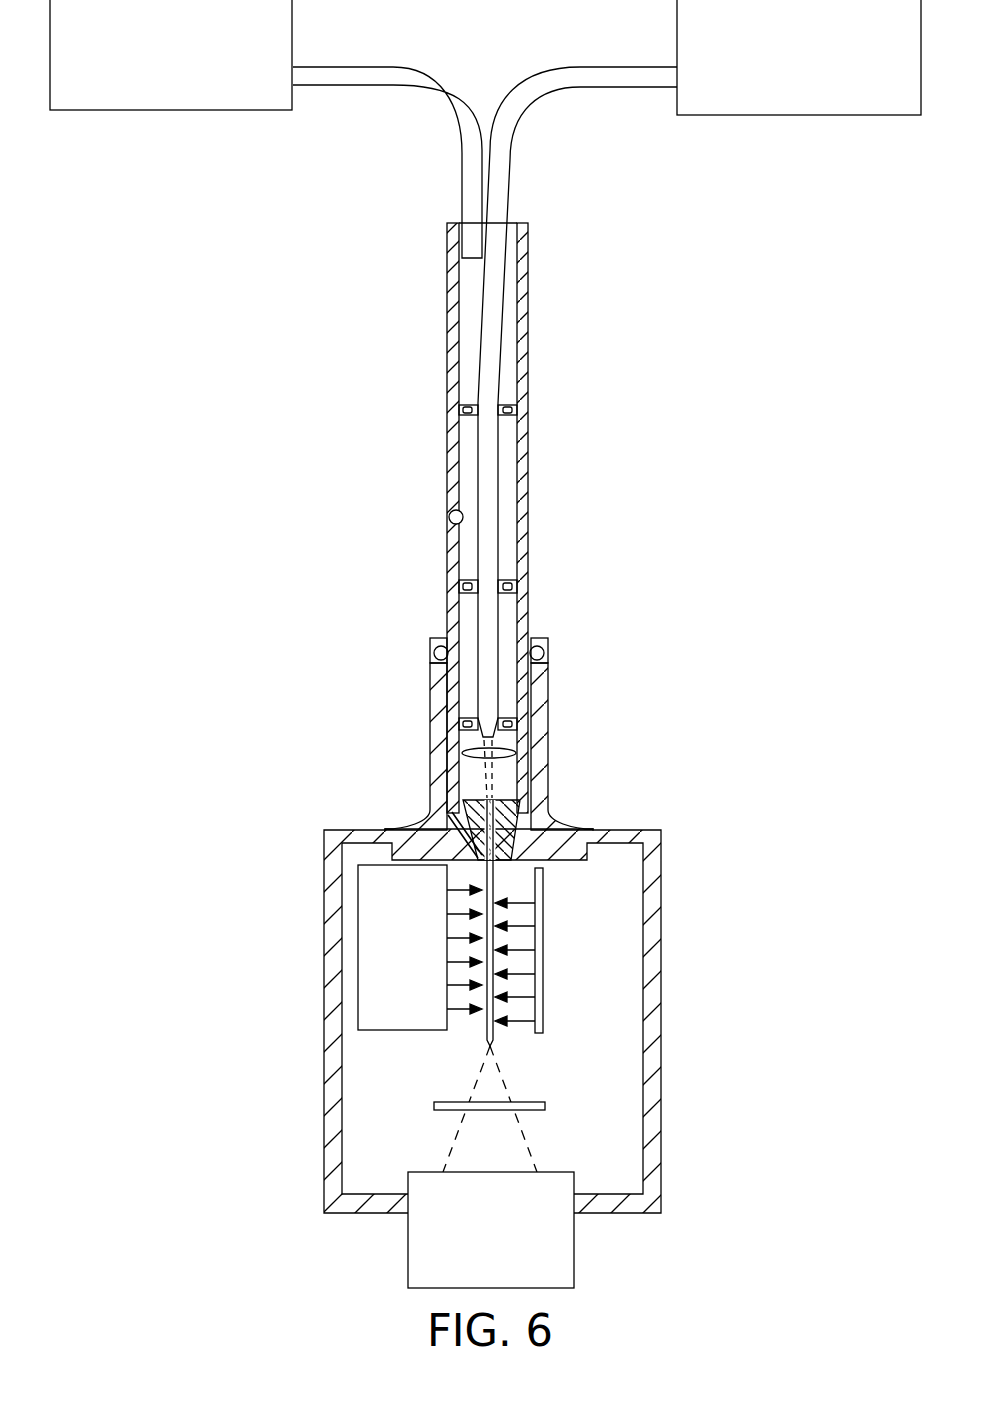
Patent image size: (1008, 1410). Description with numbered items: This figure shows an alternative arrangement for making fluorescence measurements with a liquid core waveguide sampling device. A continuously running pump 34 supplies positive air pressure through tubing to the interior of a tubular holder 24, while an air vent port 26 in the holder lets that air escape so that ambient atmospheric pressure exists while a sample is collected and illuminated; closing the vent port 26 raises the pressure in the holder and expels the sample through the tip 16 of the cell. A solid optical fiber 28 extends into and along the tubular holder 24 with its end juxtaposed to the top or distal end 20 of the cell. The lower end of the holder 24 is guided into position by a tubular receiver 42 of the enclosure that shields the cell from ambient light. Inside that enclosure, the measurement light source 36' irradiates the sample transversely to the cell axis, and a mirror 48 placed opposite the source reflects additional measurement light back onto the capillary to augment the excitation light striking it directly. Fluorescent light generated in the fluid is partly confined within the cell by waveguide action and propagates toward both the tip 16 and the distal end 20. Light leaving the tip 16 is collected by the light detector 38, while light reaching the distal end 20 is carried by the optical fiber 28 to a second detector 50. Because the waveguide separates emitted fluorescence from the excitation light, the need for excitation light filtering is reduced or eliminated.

The pump 34 is at (154, 87).
The second detector 50 is at (780, 89).
The optical fiber 28 is at (532, 117).
The tubular holder 24 is at (530, 385).
The air vent port 26 is at (448, 516).
The tubular receiver 42 is at (430, 695).
The top or distal end of cell 20 is at (490, 798).
The measurement light source 36' is at (420, 947).
The mirror 48 is at (547, 942).
The tip of cell 16 is at (490, 1040).
The light detector 38 is at (510, 1247).